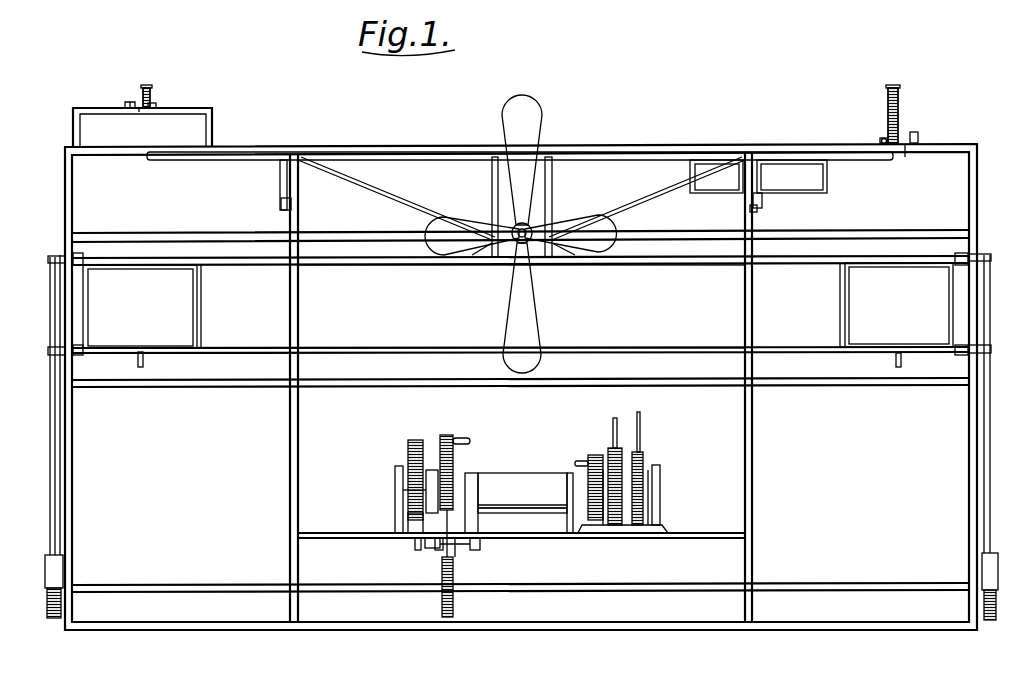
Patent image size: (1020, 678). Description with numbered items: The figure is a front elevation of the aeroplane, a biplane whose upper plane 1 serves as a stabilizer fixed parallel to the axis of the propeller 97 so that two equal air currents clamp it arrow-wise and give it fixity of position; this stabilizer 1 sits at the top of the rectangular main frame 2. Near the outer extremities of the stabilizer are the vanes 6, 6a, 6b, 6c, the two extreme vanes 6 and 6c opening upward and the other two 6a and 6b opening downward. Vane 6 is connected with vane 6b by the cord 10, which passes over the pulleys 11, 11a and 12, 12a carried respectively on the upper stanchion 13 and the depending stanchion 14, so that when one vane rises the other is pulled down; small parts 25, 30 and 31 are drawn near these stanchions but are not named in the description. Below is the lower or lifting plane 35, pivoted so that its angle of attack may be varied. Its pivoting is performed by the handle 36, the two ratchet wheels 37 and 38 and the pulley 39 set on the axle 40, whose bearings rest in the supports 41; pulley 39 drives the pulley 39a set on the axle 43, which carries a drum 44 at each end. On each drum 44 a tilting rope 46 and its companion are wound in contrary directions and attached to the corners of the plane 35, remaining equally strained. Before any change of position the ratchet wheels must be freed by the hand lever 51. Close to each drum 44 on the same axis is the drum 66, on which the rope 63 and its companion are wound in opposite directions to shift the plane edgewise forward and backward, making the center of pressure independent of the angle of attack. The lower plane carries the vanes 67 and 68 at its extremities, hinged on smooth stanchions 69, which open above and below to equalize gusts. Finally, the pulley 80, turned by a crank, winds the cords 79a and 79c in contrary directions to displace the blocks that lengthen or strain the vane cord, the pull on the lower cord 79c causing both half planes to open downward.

The upper plane (stabilizer) 1 is at (670, 147).
The rectangular main frame 2 is at (528, 646).
The vane 6 is at (196, 118).
The vane 6a is at (283, 150).
The vane 6b is at (805, 175).
The vane 6c is at (883, 140).
The cord 10 is at (438, 136).
The pulley 11 is at (152, 90).
The pulley 11a is at (282, 207).
The pulley 12 is at (899, 92).
The pulley 12a is at (758, 210).
The upper stanchion 13 is at (143, 96).
The depending stanchion 14 is at (280, 180).
The nut 25 is at (158, 108).
The pin 30 is at (139, 110).
The bracket 31 is at (125, 104).
The lower or lifting plane 35 is at (521, 306).
The handle 36 is at (463, 441).
The ratchet wheel 37 is at (408, 446).
The ratchet wheel 38 is at (416, 440).
The pulley 39 is at (453, 457).
The pulley 39a is at (455, 568).
The axle 40 is at (433, 470).
The supports 41 is at (430, 490).
The axle 43 is at (212, 578).
The drum 44 is at (62, 622).
The rope 46 is at (55, 490).
The hand lever 51 is at (478, 477).
The rope 63 is at (50, 462).
The drum 66 is at (52, 620).
The vane 67 is at (137, 304).
The vane 68 is at (904, 304).
The stanchion 69 is at (138, 362).
The cord 79a is at (640, 416).
The lower cord 79c is at (613, 430).
The pulley 80 is at (626, 482).
The propeller 97 is at (534, 110).